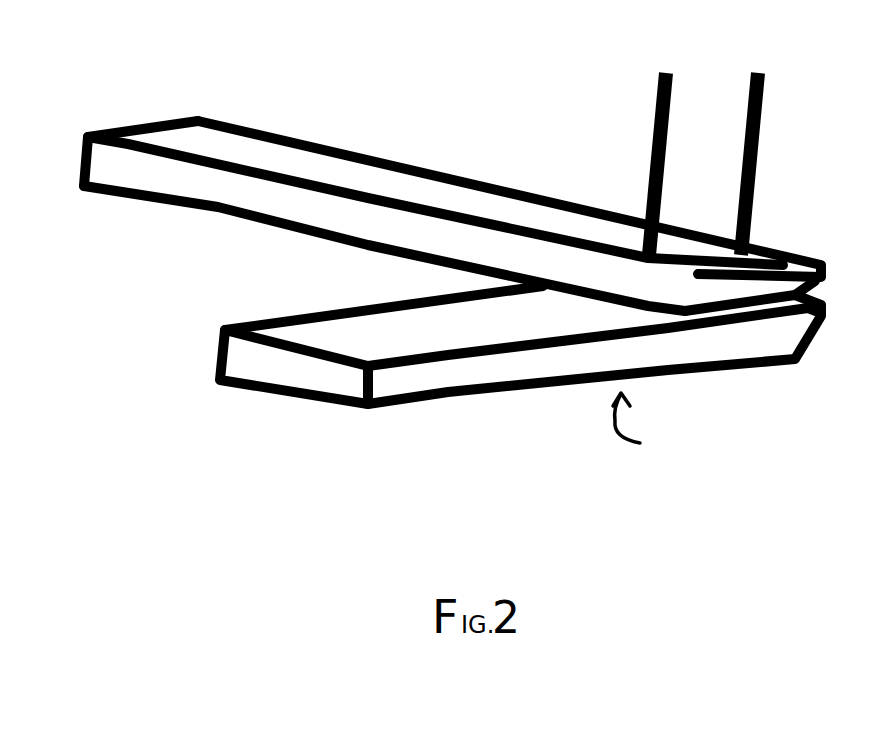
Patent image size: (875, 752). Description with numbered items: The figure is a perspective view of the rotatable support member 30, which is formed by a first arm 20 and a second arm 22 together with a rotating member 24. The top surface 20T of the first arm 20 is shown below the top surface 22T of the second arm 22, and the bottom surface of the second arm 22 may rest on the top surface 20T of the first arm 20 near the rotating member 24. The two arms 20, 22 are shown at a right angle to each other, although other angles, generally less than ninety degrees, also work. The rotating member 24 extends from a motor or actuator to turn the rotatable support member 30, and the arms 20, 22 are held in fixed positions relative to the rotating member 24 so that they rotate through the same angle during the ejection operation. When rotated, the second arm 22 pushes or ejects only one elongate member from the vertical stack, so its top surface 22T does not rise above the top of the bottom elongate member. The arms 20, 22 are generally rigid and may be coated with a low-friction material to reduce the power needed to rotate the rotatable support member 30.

The first arm 20 is at (520, 388).
The top surface of the first arm 20T is at (472, 336).
The second arm 22 is at (452, 208).
The top surface of the second arm 22T is at (555, 230).
The rotating member 24 is at (713, 157).
The rotatable support member 30 is at (654, 422).